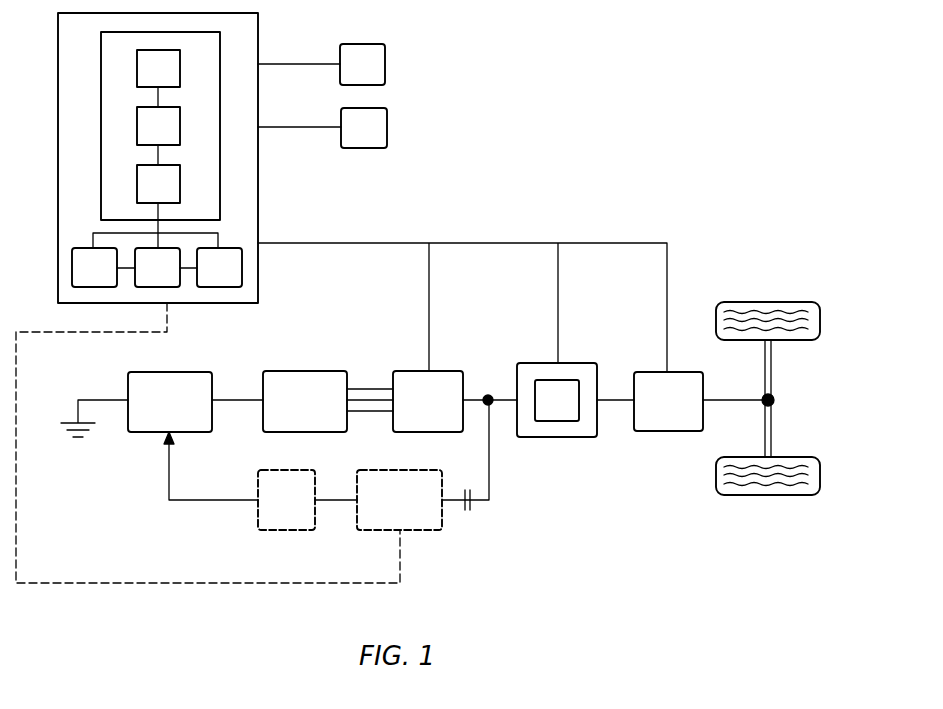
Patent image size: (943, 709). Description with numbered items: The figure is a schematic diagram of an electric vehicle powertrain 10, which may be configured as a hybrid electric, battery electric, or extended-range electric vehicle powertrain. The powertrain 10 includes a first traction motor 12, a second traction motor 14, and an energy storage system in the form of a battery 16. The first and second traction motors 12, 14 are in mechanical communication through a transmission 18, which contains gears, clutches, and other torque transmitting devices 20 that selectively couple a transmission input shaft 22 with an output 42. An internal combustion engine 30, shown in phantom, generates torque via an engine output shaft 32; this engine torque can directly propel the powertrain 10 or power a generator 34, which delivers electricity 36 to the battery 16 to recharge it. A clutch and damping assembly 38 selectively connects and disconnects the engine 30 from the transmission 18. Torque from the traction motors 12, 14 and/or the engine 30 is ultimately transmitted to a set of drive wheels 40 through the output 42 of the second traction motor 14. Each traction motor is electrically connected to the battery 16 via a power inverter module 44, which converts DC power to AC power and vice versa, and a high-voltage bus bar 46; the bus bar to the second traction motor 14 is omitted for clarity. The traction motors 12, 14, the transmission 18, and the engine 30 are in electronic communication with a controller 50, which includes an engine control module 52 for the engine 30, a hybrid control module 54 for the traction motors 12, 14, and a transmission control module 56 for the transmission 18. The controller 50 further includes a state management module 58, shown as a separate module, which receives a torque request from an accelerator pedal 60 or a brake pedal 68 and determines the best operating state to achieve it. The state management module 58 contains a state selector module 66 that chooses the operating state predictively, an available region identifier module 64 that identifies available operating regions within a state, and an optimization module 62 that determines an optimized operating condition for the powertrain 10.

The electric vehicle powertrain 10 is at (584, 88).
The first traction motor 12 is at (420, 409).
The second traction motor 14 is at (660, 409).
The battery 16 is at (162, 409).
The transmission 18 is at (572, 363).
The torque transmitting devices 20 is at (549, 408).
The transmission input shaft 22 is at (503, 392).
The internal combustion engine 30 is at (392, 507).
The engine output shaft 32 is at (490, 468).
The generator 34 is at (279, 507).
The electricity 36 is at (165, 487).
The clutch and damping assembly 38 is at (468, 512).
The drive wheels 40 is at (790, 495).
The output 42 is at (736, 396).
The power inverter module 44 is at (297, 409).
The high-voltage bus bar 46 is at (375, 383).
The controller 50 is at (71, 42).
The engine control module 52 is at (87, 275).
The hybrid control module 54 is at (150, 275).
The transmission control module 56 is at (212, 275).
The state management module 58 is at (193, 150).
The accelerator pedal 60 is at (357, 136).
The optimization module 62 is at (151, 192).
The available region identifier module 64 is at (151, 134).
The state selector module 66 is at (151, 76).
The brake pedal 68 is at (355, 72).